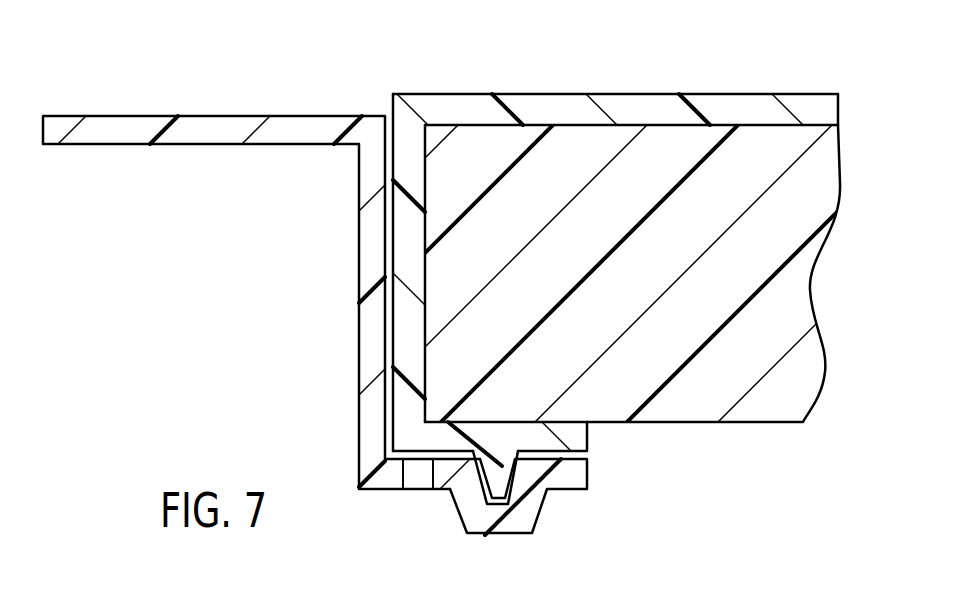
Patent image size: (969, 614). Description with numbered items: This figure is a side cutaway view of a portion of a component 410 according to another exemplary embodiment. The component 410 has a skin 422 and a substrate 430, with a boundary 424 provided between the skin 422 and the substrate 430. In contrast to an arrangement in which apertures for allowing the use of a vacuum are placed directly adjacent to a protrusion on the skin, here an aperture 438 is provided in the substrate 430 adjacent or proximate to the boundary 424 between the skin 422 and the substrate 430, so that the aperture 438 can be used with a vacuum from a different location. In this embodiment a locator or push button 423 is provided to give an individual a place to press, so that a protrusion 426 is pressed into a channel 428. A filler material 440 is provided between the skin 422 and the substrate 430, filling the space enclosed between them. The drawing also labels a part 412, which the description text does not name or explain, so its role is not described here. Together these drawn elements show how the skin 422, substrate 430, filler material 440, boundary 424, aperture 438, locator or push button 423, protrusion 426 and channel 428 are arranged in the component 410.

The component 410 is at (783, 50).
The plate 412 is at (208, 113).
The skin 422 is at (602, 93).
The locator or push button 423 is at (588, 436).
The boundary 424 is at (383, 90).
The protrusion 426 is at (541, 490).
The channel 428 is at (497, 503).
The substrate 430 is at (218, 148).
The aperture 438 is at (420, 478).
The filler material 440 is at (585, 272).